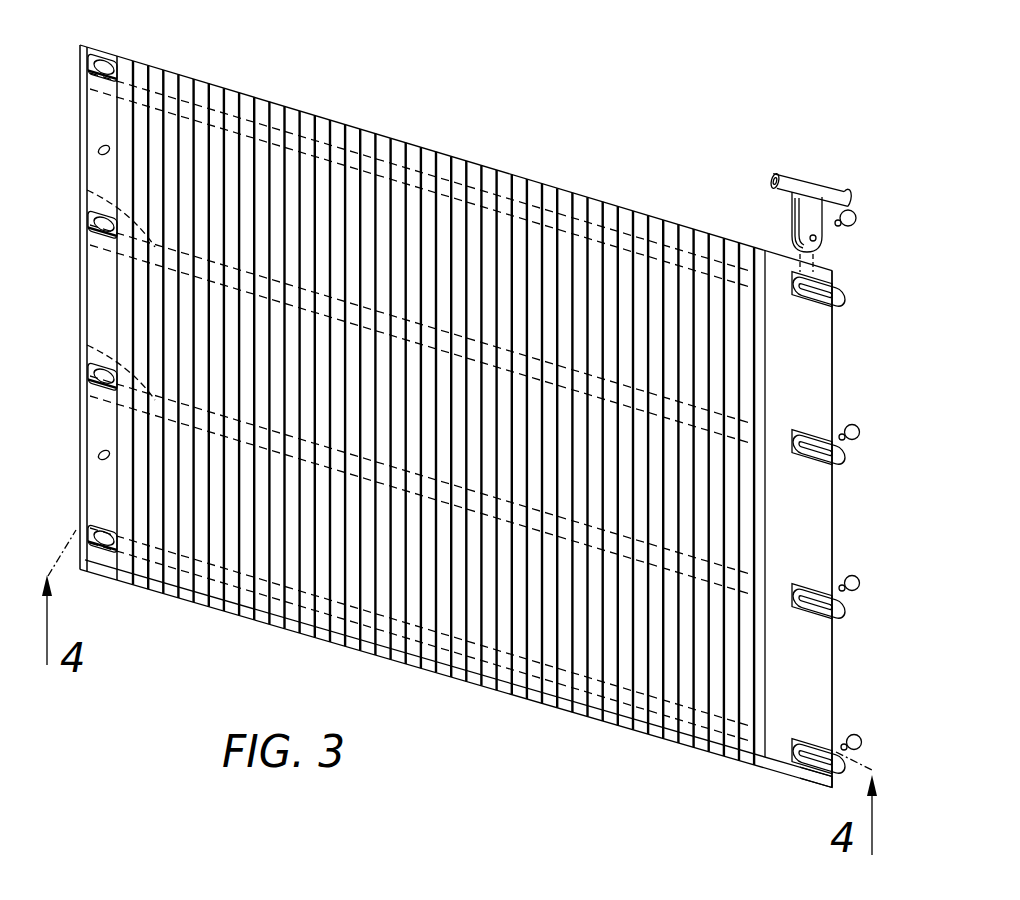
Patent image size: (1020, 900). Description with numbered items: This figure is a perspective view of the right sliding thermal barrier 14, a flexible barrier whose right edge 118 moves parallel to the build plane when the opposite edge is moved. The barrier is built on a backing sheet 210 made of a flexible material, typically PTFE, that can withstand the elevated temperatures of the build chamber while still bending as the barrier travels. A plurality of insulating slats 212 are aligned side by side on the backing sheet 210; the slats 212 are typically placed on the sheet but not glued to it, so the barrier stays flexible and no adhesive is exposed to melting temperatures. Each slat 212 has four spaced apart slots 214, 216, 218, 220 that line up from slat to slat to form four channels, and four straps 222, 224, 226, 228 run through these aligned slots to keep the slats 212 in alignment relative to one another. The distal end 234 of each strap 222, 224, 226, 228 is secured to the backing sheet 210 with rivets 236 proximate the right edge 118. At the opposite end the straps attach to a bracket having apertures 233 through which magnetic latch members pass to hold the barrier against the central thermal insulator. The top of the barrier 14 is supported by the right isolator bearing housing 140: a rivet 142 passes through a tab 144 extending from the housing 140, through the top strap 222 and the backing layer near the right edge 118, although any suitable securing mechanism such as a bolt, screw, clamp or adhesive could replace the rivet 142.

The right sliding thermal barrier 14 is at (536, 119).
The right edge 118 is at (834, 655).
The right isolator bearing housing 140 is at (803, 178).
The rivet 142 is at (850, 210).
The tab 144 is at (817, 239).
The backing sheet 210 is at (808, 349).
The insulating slats 212 is at (228, 82).
The slot 214 is at (128, 52).
The slot 216 is at (92, 212).
The slot 218 is at (92, 366).
The slot 220 is at (92, 527).
The strap 222 is at (834, 293).
The strap 224 is at (815, 440).
The strap 226 is at (808, 590).
The strap 228 is at (810, 745).
The apertures 233 is at (98, 148).
The distal end 234 is at (846, 792).
The rivets 236 is at (856, 735).